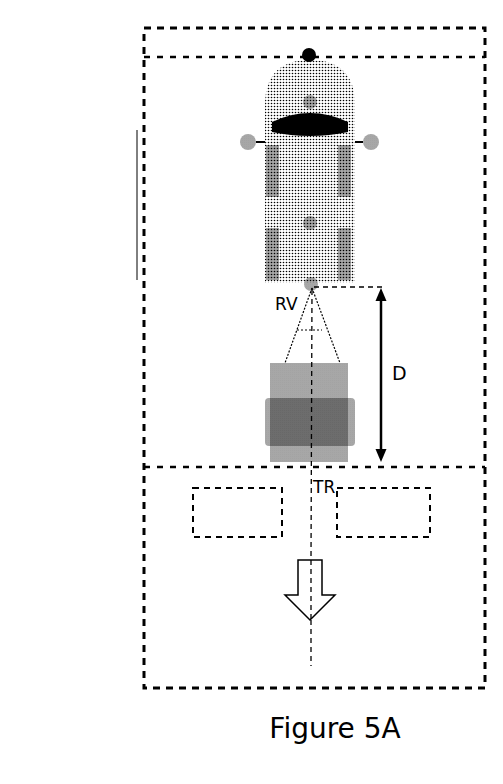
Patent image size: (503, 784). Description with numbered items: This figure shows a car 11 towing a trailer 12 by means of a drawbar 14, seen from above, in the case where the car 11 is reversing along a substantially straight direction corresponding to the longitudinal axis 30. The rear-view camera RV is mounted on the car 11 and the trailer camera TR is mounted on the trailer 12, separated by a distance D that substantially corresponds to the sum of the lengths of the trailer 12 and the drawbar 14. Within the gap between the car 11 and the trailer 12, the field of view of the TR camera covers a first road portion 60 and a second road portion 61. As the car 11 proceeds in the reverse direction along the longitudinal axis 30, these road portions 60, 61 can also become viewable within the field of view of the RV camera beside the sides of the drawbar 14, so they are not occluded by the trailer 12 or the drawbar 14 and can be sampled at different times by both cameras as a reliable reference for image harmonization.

The car 11 is at (250, 184).
The trailer 12 is at (245, 402).
The drawbar 14 is at (267, 323).
The longitudinal axis 30 is at (312, 479).
The first road portion 60 is at (237, 512).
The second road portion 61 is at (383, 512).